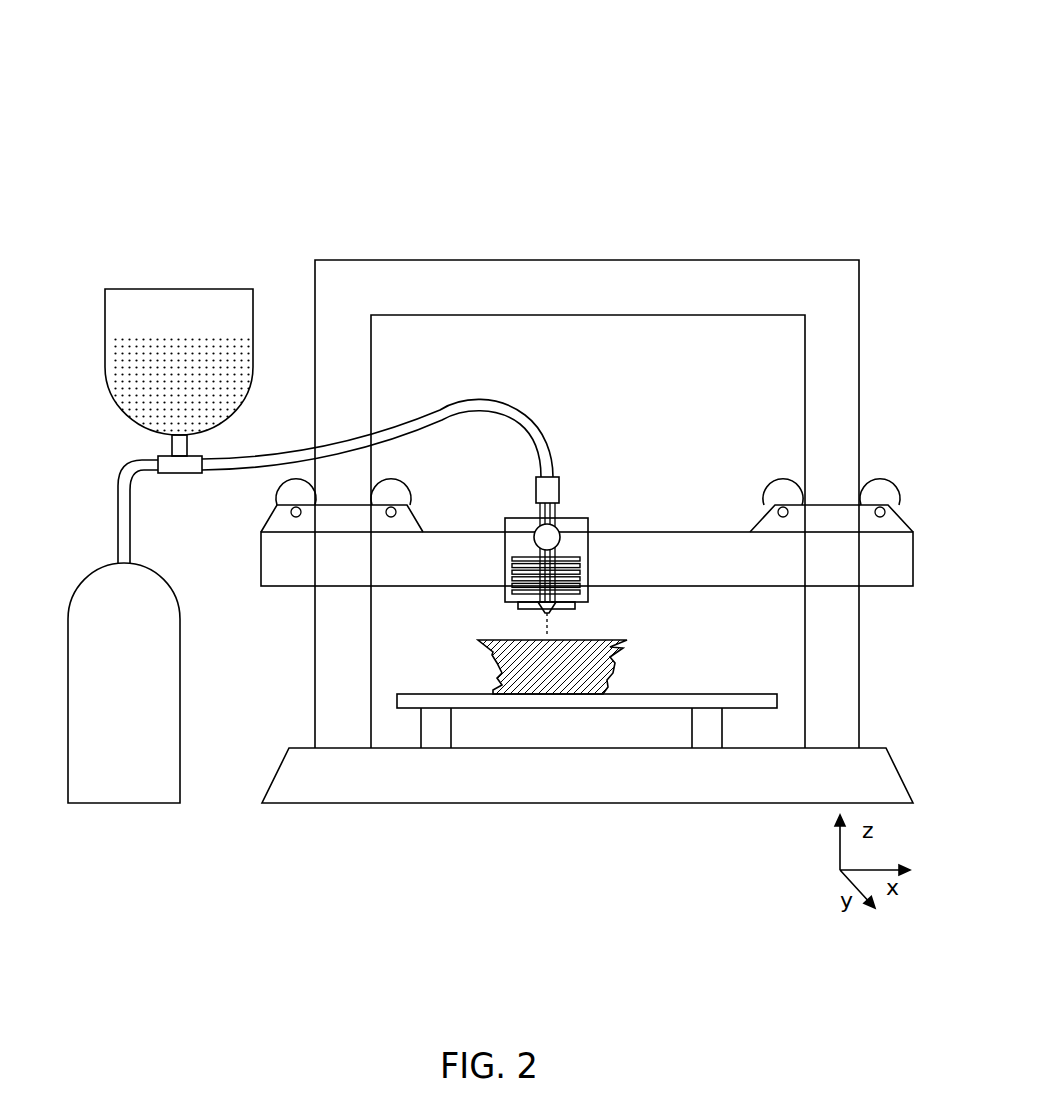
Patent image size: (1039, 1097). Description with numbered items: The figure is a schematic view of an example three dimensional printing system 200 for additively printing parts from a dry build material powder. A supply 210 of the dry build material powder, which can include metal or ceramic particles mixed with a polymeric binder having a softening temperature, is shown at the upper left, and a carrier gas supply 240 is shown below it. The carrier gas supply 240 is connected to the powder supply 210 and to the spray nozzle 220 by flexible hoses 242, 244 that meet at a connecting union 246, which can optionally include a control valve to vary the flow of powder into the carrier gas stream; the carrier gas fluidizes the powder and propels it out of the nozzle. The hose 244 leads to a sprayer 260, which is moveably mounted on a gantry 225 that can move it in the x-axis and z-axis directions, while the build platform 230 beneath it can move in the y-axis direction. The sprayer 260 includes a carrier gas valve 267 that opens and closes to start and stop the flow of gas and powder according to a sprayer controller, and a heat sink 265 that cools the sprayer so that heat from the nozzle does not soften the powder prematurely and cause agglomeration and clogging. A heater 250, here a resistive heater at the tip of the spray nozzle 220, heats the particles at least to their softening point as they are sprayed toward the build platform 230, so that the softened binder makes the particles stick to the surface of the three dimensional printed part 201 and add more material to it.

The three dimensional printing system 200 is at (180, 70).
The supply of dry build material powder 210 is at (200, 289).
The flexible hose 242 is at (120, 485).
The connecting union 246 is at (180, 473).
The carrier gas supply 240 is at (133, 803).
The flexible hose 244 is at (471, 404).
The gantry 225 is at (912, 517).
The sprayer 260 is at (562, 490).
The carrier gas valve 267 is at (560, 535).
The heat sink 265 is at (580, 567).
The heater 250 is at (575, 605).
The spray nozzle 220 is at (550, 614).
The 3D printed part 201 is at (495, 663).
The build platform 230 is at (421, 710).